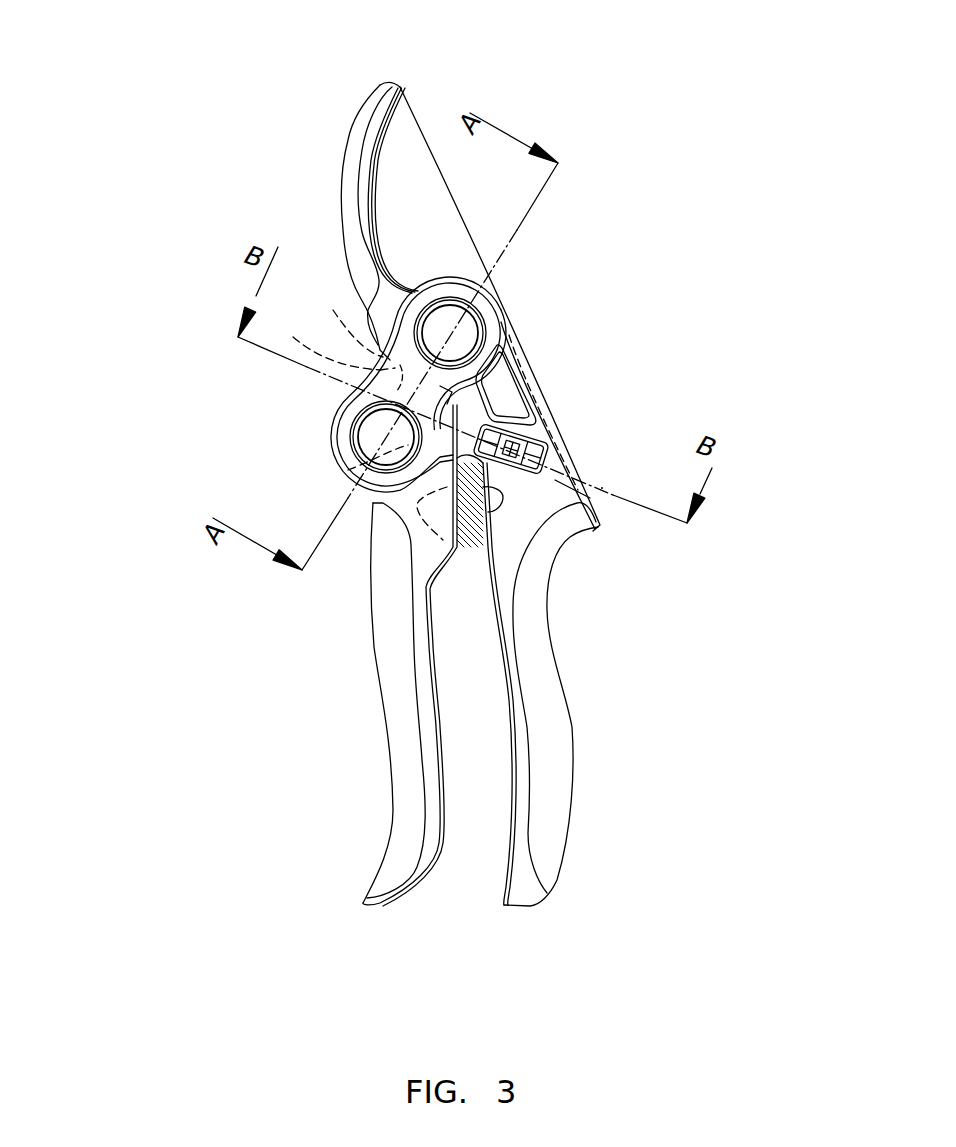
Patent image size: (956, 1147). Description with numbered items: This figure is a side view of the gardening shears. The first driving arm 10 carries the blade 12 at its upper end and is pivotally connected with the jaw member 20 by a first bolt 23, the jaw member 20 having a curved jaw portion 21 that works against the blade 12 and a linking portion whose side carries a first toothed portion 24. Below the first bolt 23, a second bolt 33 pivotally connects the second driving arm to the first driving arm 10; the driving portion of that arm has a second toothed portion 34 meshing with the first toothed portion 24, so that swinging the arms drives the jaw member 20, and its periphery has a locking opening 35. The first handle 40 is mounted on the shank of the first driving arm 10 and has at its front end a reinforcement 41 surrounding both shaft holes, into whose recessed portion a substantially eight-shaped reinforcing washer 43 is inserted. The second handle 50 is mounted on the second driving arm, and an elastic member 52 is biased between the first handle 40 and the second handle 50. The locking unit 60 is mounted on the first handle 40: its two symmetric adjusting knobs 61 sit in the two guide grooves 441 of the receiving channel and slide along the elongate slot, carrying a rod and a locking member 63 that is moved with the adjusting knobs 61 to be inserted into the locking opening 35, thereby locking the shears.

The first driving arm 10 is at (541, 272).
The blade 12 is at (405, 155).
The jaw member 20 is at (313, 187).
The jaw portion 21 is at (360, 143).
The first bolt 23 is at (460, 338).
The first toothed portion 24 is at (356, 338).
The second bolt 33 is at (380, 425).
The second toothed portion 34 is at (328, 342).
The locking opening 35 is at (470, 419).
The first handle 40 is at (594, 622).
The reinforcement 41 is at (500, 315).
The reinforcing washer 43 is at (447, 382).
The guide grooves 441 is at (548, 452).
The second handle 50 is at (355, 648).
The elastic member 52 is at (467, 510).
The locking unit 60 is at (613, 495).
The adjusting knobs 61 is at (578, 456).
The locking member 63 is at (348, 470).